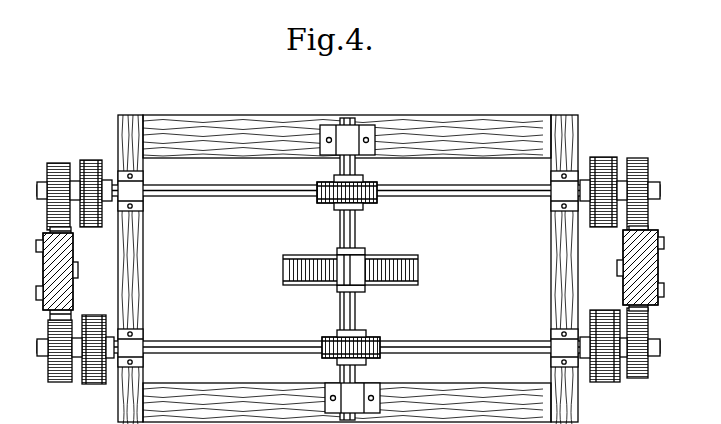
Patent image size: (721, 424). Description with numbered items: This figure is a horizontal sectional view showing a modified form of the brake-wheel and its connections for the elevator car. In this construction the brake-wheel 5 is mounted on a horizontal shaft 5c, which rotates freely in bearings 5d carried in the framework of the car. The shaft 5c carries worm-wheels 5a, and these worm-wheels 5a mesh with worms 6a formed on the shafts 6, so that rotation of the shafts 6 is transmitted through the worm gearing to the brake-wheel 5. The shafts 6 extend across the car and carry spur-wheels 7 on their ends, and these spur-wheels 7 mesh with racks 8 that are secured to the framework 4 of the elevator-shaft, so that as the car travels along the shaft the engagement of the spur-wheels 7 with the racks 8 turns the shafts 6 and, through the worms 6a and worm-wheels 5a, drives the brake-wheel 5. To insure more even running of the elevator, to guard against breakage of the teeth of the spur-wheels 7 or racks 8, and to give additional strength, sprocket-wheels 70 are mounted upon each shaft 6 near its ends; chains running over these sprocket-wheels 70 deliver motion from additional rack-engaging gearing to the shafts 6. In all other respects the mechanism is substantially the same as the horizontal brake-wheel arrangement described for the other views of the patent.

The framework 4 is at (43, 276).
The brake-wheel 5 is at (418, 268).
The worm-wheels 5a is at (378, 196).
The horizontal shaft 5c is at (357, 314).
The bearings 5d is at (365, 145).
The shafts 6 is at (496, 197).
The worms 6a is at (336, 208).
The spur-wheels 7 is at (47, 190).
The racks 8 is at (50, 229).
The sprocket-wheels 70 is at (95, 160).